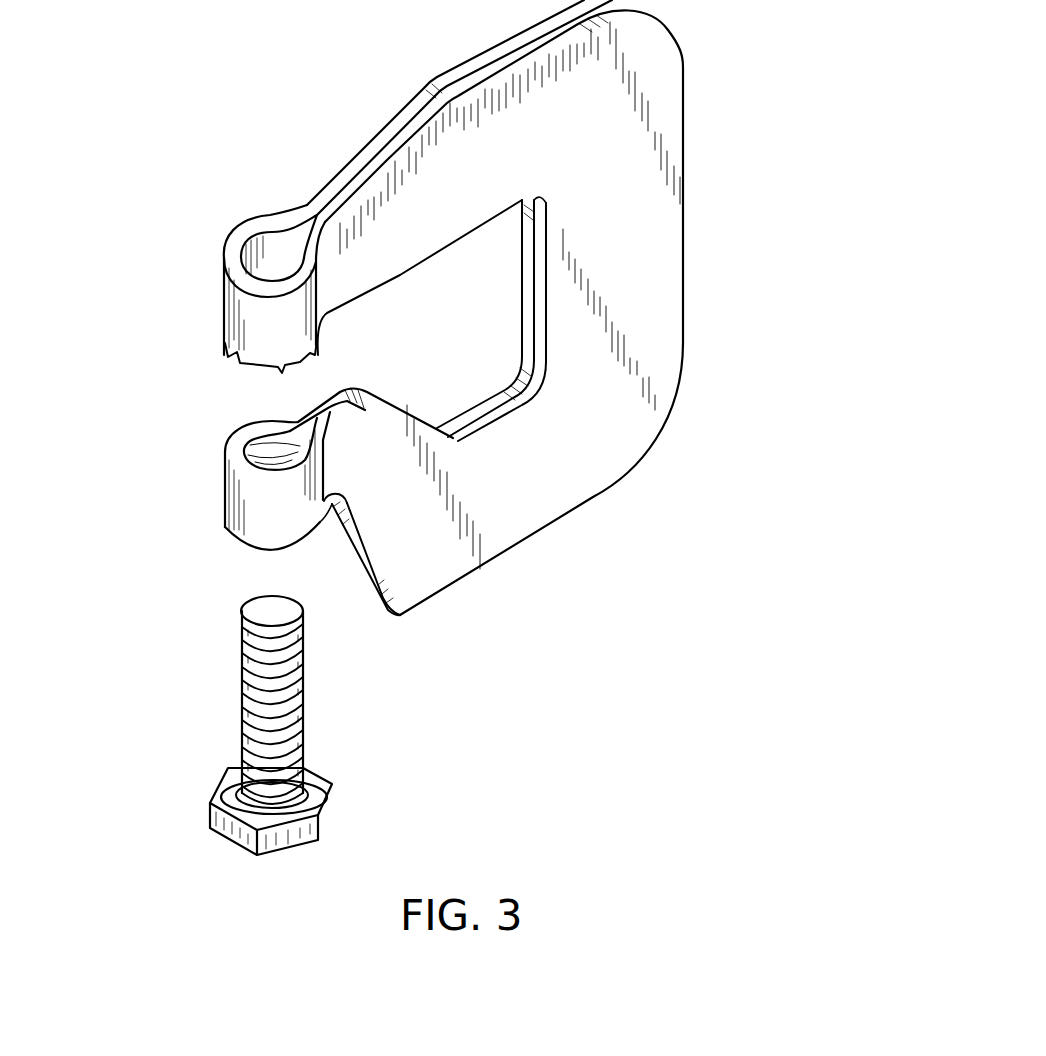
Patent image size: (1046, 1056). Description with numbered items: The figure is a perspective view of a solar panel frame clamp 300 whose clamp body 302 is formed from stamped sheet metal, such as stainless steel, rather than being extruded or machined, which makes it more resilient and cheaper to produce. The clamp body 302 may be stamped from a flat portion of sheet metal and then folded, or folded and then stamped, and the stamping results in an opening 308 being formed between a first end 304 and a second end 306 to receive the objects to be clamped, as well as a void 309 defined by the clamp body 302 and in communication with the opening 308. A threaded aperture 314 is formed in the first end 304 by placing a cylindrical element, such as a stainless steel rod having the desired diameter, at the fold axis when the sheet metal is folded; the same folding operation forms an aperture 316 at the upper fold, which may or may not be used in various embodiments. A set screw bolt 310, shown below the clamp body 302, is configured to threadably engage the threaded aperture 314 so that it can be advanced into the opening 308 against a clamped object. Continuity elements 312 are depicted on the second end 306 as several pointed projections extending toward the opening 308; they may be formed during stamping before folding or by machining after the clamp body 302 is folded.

The solar panel frame clamp 300 is at (372, 66).
The clamp body 302 is at (700, 268).
The first end 304 is at (193, 716).
The second end 306 is at (252, 176).
The opening 308 is at (325, 388).
The void 309 is at (505, 345).
The set screw bolt 310 is at (225, 718).
The continuity element 312 is at (238, 343).
The threaded aperture 314 is at (262, 458).
The aperture 316 is at (262, 248).